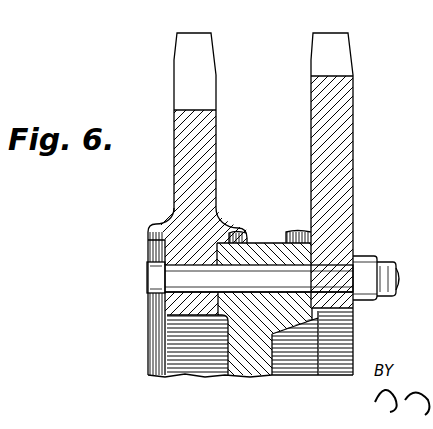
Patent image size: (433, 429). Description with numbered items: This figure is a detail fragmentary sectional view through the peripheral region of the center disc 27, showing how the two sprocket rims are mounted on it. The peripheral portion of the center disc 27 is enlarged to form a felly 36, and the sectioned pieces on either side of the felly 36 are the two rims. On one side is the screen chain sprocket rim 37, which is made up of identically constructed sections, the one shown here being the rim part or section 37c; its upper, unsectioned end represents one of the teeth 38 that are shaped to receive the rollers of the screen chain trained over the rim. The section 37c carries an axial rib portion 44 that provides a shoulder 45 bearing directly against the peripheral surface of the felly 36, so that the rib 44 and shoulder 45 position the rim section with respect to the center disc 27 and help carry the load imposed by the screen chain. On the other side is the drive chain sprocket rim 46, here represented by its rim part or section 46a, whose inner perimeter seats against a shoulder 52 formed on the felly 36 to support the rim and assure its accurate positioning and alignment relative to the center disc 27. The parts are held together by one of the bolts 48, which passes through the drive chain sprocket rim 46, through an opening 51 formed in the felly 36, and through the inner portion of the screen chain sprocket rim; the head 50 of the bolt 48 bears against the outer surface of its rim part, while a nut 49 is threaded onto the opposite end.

The screen chain sprocket rim 37 is at (219, 86).
The teeth 38 is at (174, 99).
The rim part or section 37c is at (216, 138).
The drive chain sprocket rim 46 is at (355, 124).
The rim part or section 46a is at (355, 184).
The shoulder 45 is at (218, 236).
The axial rib portion 44 is at (236, 230).
The felly 36 is at (284, 243).
The openings 51 is at (258, 264).
The head 50 is at (160, 280).
The nuts 49 is at (362, 257).
The bolts 48 is at (397, 278).
The center disc 27 is at (252, 375).
The shoulder 52 is at (300, 333).